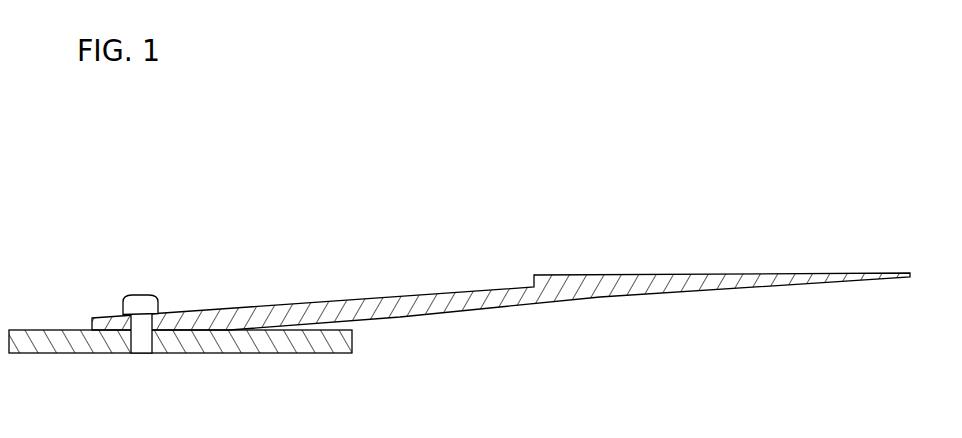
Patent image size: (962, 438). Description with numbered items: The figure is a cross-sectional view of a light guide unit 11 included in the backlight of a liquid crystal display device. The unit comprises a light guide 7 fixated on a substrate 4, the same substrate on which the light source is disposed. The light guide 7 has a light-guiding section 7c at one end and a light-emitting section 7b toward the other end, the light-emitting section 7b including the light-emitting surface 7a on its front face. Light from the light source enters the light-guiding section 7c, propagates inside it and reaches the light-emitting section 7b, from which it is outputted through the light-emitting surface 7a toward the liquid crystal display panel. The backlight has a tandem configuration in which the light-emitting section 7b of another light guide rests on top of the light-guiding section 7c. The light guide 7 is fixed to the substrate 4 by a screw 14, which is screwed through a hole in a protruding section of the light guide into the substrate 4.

The light guide unit 11 is at (768, 124).
The substrate 4 is at (55, 349).
The light guide 7 is at (548, 297).
The light-emitting surface 7a is at (835, 272).
The light-emitting section 7b is at (680, 281).
The light-guiding section 7c is at (349, 302).
The screw 14 is at (141, 346).